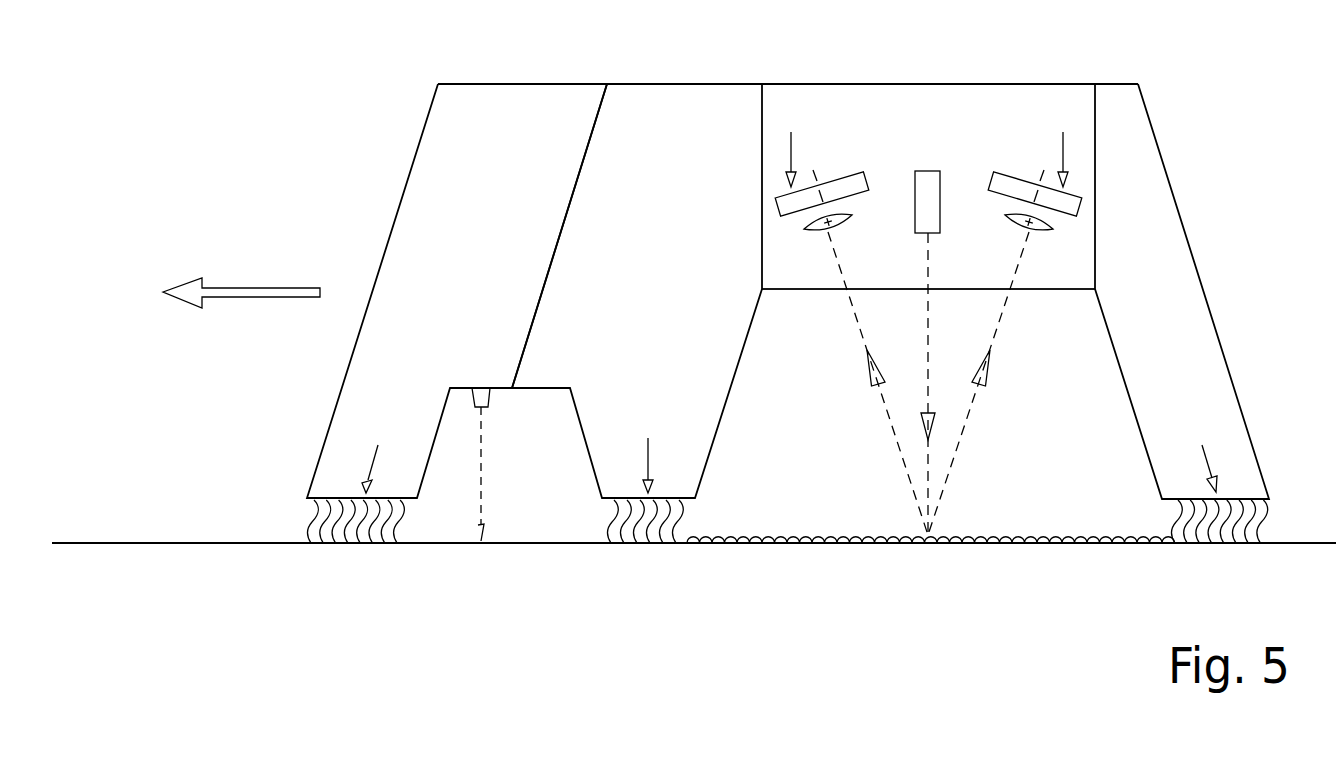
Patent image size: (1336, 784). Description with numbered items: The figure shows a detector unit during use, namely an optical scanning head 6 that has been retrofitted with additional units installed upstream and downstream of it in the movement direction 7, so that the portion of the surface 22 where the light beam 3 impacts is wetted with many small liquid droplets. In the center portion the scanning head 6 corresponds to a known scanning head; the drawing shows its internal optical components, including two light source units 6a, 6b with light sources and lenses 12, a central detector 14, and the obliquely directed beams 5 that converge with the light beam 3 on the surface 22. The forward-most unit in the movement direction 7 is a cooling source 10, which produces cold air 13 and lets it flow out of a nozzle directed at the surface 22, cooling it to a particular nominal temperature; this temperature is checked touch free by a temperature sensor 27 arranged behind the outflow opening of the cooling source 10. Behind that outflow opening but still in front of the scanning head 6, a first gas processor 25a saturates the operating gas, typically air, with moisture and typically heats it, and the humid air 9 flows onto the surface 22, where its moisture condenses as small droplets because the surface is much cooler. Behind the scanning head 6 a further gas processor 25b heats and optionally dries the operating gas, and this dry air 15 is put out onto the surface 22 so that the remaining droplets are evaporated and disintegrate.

The light beam 3 is at (928, 370).
The light beams 5 is at (928, 383).
The optical scanning head 6 is at (1015, 84).
The first light source unit 6a is at (793, 145).
The second light source unit 6b is at (1065, 145).
The movement direction 7 is at (253, 290).
The humid air 9 is at (683, 522).
The cooling source 10 is at (457, 291).
The light source with lens 12 is at (853, 180).
The cold air 13 is at (402, 524).
The detector 14 is at (933, 180).
The dry air 15 is at (1176, 520).
The surface 22 is at (790, 547).
The first gas processor 25a is at (637, 291).
The gas processor 25b is at (1182, 291).
The temperature sensor 27 is at (487, 402).